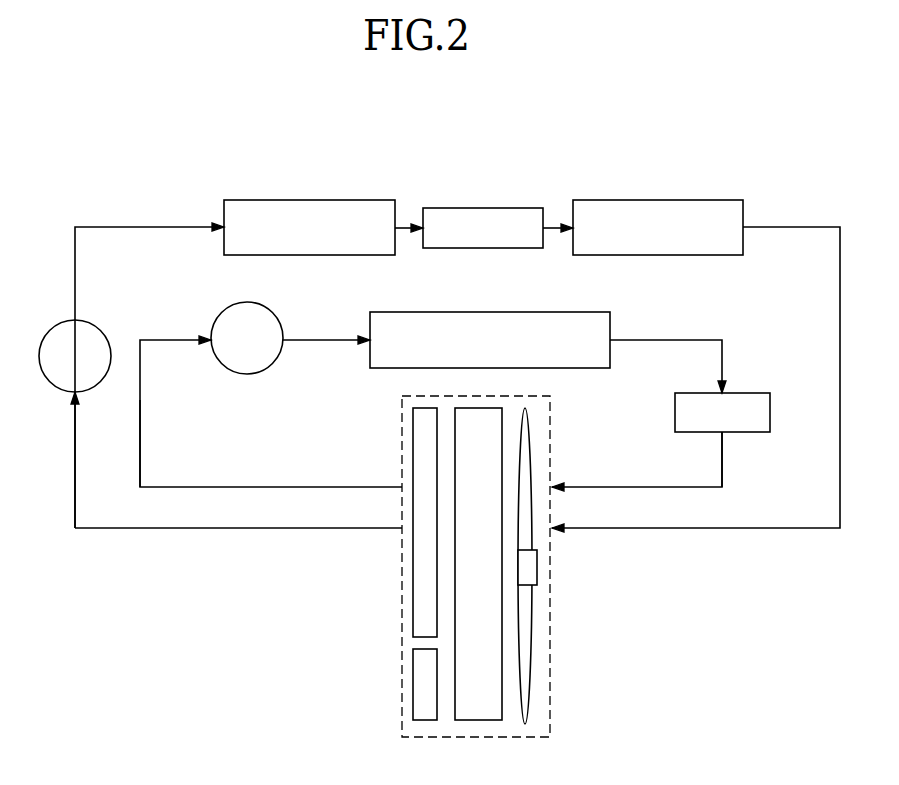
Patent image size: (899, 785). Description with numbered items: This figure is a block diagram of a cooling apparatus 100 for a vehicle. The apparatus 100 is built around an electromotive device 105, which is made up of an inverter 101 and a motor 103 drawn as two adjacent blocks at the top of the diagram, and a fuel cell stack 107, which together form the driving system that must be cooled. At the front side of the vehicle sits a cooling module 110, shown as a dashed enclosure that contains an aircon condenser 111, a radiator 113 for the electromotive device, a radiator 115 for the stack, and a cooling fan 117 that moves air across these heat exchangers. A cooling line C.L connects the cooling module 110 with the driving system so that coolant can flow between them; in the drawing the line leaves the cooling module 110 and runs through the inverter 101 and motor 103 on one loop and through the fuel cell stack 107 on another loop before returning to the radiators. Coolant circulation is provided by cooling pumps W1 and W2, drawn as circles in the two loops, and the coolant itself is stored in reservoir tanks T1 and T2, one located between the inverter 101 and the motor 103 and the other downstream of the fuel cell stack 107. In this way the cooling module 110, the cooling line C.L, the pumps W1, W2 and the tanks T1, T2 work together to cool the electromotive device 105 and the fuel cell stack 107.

The cooling apparatus 100 is at (760, 158).
The inverter 101 is at (365, 200).
The motor 103 is at (600, 200).
The electromotive device 105 is at (483, 155).
The fuel cell stack 107 is at (560, 312).
The cooling module 110 is at (498, 575).
The aircon condenser 111 is at (418, 603).
The radiator for an electromotive device 113 is at (418, 685).
The radiator for a stack 115 is at (473, 707).
The cooling fan 117 is at (525, 658).
The reservoir tank T1 is at (483, 248).
The reservoir tank T2 is at (750, 393).
The cooling pump W1 is at (50, 328).
The cooling pump W2 is at (247, 302).
The cooling line C.L is at (138, 437).